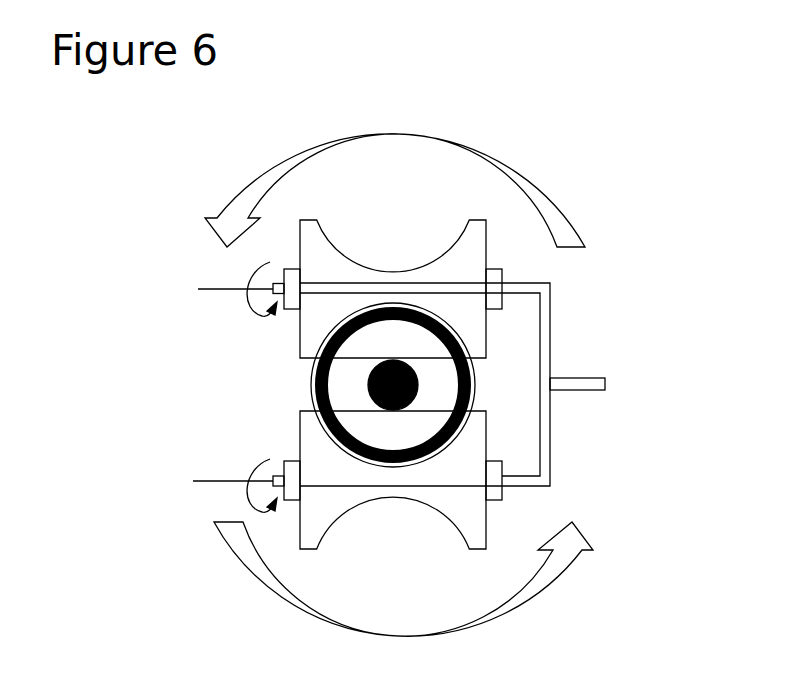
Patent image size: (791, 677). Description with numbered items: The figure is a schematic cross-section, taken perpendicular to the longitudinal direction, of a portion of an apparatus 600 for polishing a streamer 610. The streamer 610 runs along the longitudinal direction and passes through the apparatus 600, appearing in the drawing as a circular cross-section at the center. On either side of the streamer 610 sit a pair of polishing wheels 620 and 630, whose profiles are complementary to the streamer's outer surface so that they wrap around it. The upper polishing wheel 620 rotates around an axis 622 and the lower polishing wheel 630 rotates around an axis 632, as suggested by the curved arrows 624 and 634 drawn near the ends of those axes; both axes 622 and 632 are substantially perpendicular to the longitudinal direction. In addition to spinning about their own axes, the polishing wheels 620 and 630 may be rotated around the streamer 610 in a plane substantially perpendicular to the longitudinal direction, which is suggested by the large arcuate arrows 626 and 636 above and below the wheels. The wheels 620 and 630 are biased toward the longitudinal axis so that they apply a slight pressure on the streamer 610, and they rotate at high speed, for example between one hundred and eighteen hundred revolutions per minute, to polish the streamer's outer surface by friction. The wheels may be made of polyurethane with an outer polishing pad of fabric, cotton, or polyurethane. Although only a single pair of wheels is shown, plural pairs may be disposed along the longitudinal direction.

The apparatus 600 is at (428, 116).
The streamer 610 is at (478, 390).
The polishing wheel 620 is at (487, 246).
The axis 622 is at (210, 288).
The arrow 624 is at (265, 316).
The arrow 626 is at (518, 160).
The polishing wheel 630 is at (488, 531).
The axis 632 is at (218, 482).
The arrow 634 is at (268, 458).
The arrow 636 is at (548, 593).